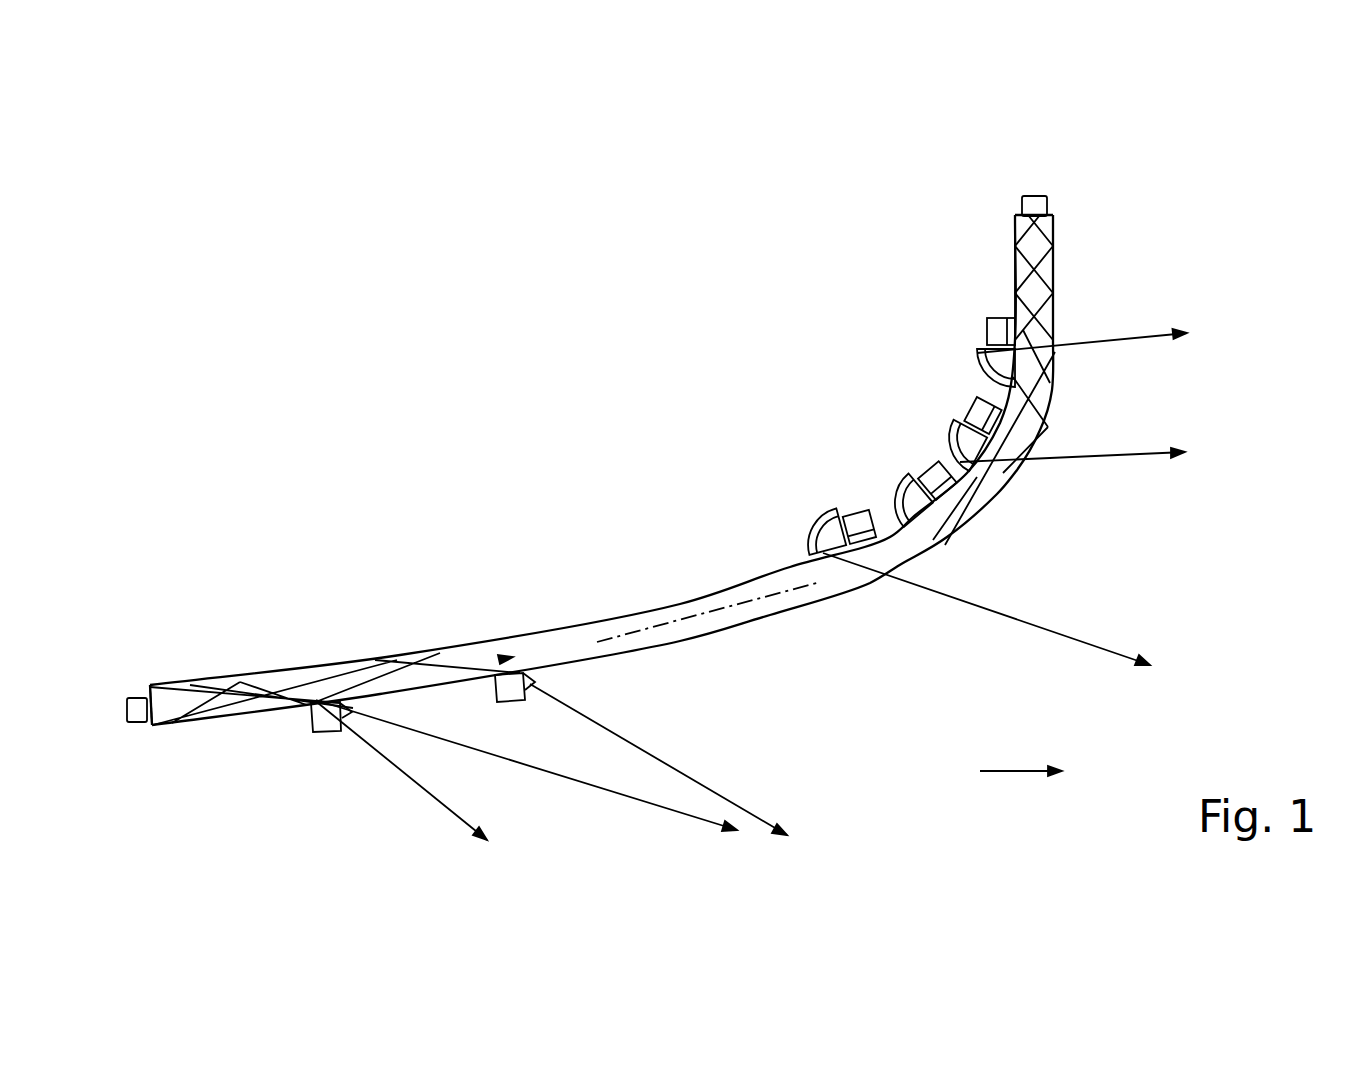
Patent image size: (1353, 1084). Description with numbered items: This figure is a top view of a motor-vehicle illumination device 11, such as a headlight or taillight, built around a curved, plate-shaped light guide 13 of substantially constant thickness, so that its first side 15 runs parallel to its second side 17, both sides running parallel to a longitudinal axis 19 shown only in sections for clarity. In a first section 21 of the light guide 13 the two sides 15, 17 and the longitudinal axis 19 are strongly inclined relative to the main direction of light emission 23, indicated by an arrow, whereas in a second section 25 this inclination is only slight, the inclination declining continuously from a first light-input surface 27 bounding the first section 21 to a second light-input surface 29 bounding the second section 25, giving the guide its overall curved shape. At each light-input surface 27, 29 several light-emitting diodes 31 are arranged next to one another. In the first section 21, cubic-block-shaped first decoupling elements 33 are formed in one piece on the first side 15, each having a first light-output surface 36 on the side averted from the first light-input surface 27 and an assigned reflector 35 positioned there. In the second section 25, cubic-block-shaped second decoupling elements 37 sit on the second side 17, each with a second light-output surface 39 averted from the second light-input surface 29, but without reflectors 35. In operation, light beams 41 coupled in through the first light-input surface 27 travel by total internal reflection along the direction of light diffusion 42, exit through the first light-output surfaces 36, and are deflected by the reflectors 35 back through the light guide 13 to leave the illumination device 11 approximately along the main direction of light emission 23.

The illumination device 11 is at (247, 304).
The light guide 13 is at (567, 643).
The first side 15 is at (1015, 252).
The second side 17 is at (1055, 258).
The longitudinal axis 19 is at (675, 628).
The first section 21 is at (777, 370).
The main direction of light emission 23 is at (1018, 775).
The second section 25 is at (336, 537).
The first light-input surface 27 is at (1015, 214).
The second light-input surface 29 is at (146, 722).
The light-emitting diode 31 is at (132, 700).
The first decoupling elements 33 is at (990, 325).
The reflector 35 is at (990, 377).
The first light-output surface 36 is at (988, 345).
The second decoupling elements 37 is at (325, 732).
The second light-output surface 39 is at (343, 726).
The light beams 41 is at (1125, 338).
The direction of light diffusion 42 is at (498, 659).